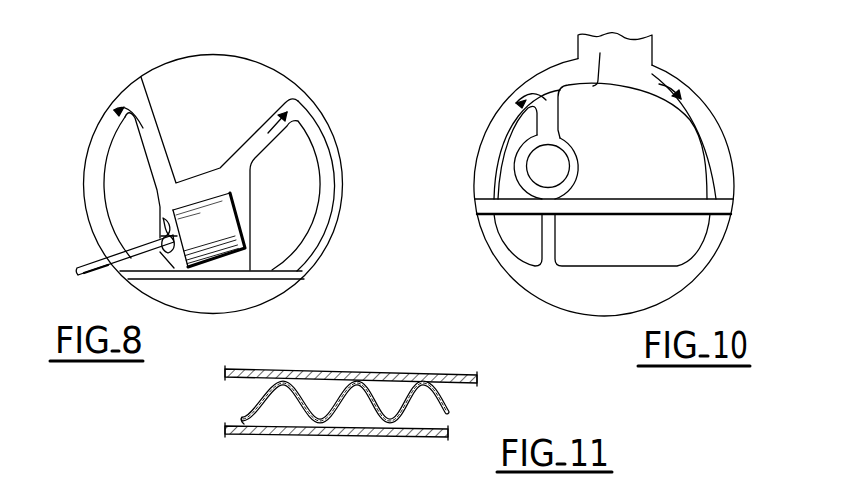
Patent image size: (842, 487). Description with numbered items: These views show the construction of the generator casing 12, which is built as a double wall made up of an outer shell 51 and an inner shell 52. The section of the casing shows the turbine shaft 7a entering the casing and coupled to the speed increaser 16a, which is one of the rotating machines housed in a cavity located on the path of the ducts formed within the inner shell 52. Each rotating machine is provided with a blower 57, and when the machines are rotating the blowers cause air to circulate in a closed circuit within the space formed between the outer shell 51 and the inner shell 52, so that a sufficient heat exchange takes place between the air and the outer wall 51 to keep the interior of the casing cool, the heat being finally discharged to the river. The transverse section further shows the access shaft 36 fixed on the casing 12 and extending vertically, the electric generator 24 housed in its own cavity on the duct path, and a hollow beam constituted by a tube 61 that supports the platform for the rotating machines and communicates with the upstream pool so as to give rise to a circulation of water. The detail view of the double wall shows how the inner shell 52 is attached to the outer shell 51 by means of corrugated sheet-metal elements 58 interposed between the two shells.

In FIG. 8, the generator casing 12 is at (291, 72).
In FIG. 10, the generator casing 12 is at (723, 142).
In FIG. 8, the outer shell 51 is at (340, 203).
In FIG. 10, the outer shell 51 is at (718, 248).
In FIG. 11, the outer shell 51 is at (350, 436).
In FIG. 8, the inner shell 52 is at (313, 141).
In FIG. 10, the inner shell 52 is at (678, 117).
In FIG. 11, the inner shell 52 is at (335, 370).
In FIG. 8, the blower 57 is at (152, 216).
In FIG. 8, the speed increaser 16a is at (223, 222).
In FIG. 8, the turbine shaft 7a is at (87, 262).
In FIG. 10, the access shaft 36 is at (655, 57).
In FIG. 10, the electric generator 24 is at (557, 157).
In FIG. 10, the tube 61 is at (650, 201).
In FIG. 11, the corrugated sheet-metal element 58 is at (262, 408).